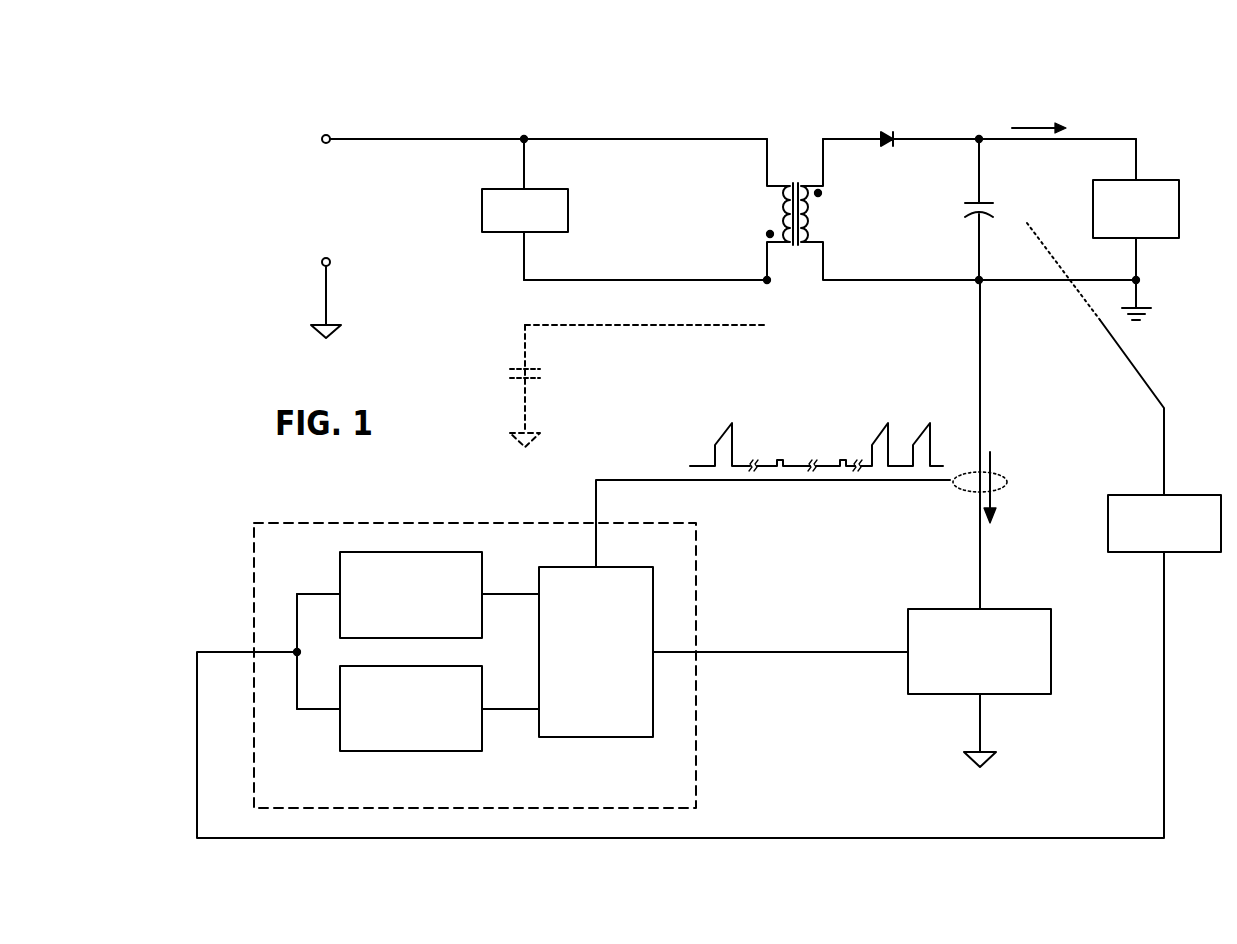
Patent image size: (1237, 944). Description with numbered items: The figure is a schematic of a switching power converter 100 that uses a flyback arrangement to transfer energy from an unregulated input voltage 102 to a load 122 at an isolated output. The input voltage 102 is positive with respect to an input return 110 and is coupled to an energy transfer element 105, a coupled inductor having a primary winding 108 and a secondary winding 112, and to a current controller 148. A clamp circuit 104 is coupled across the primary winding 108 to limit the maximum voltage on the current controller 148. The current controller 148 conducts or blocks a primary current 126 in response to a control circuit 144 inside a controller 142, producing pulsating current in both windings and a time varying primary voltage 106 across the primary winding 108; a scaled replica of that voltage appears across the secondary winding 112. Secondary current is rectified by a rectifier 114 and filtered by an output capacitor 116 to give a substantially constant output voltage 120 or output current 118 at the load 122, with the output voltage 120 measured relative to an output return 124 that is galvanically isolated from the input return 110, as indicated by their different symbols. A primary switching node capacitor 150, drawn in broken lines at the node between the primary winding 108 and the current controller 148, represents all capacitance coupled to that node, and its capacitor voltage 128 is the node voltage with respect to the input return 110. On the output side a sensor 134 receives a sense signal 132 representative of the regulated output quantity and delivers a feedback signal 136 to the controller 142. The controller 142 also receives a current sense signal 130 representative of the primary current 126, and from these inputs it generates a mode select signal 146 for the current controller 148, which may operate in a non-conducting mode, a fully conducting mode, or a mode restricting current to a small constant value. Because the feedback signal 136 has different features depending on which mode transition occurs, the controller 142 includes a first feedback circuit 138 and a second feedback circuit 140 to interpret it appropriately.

The switching power converter 100 is at (236, 325).
The input voltage VIN 102 is at (306, 208).
The clamp circuit 104 is at (476, 215).
The energy transfer element T1 105 is at (799, 178).
The voltage VP 106 is at (692, 195).
The primary winding 108 is at (775, 210).
The input return 110 is at (333, 314).
The secondary winding 112 is at (824, 210).
The rectifier D1 114 is at (886, 128).
The capacitor C1 116 is at (974, 190).
The output current IO 118 is at (1014, 120).
The output voltage VO 120 is at (1056, 195).
The load 122 is at (1148, 174).
The output return 124 is at (1152, 322).
The current IP 126 is at (998, 500).
The voltage VCP 128 is at (570, 361).
The current sense signal 130 is at (668, 470).
The sense signal 132 is at (1152, 408).
The sensor 134 is at (1138, 490).
The feedback signal UFB 136 is at (1168, 626).
The first feedback circuit 138 is at (340, 563).
The second feedback circuit 140 is at (363, 757).
The controller 142 is at (699, 790).
The control circuit 144 is at (620, 740).
The mode select signal 146 is at (812, 663).
The current controller 148 is at (1010, 698).
The capacitor CP 150 is at (516, 360).